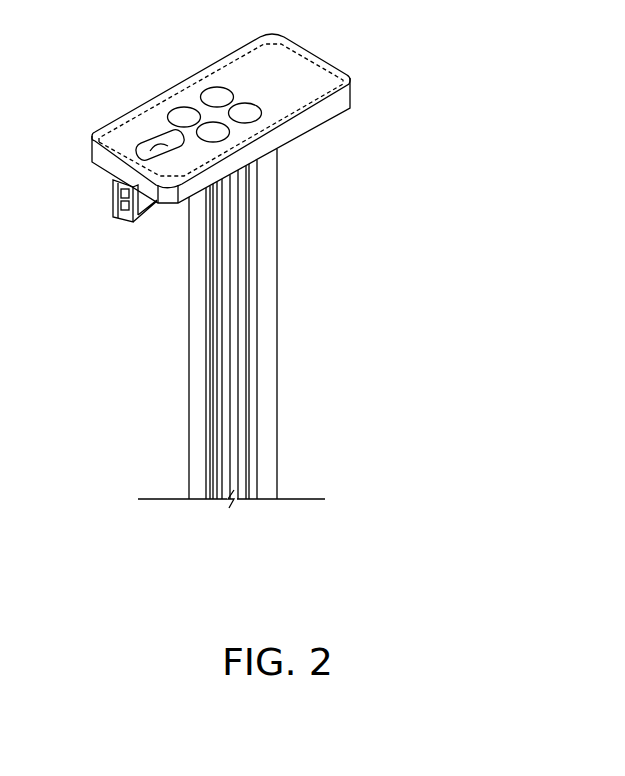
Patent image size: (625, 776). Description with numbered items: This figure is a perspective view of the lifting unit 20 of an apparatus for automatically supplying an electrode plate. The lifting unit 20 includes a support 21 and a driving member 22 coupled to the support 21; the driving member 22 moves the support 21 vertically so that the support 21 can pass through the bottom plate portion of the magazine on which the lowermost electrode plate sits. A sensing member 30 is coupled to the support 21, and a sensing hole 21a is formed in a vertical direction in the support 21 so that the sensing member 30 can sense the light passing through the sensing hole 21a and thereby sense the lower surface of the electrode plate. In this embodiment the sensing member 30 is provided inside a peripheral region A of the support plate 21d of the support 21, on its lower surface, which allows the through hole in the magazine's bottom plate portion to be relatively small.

The peripheral region A is at (310, 53).
The lifting unit 20 is at (316, 271).
The support 21 is at (291, 119).
The sensing hole 21a is at (168, 152).
The support plate 21d is at (290, 92).
The driving member 22 is at (255, 243).
The sensing member 30 is at (113, 197).